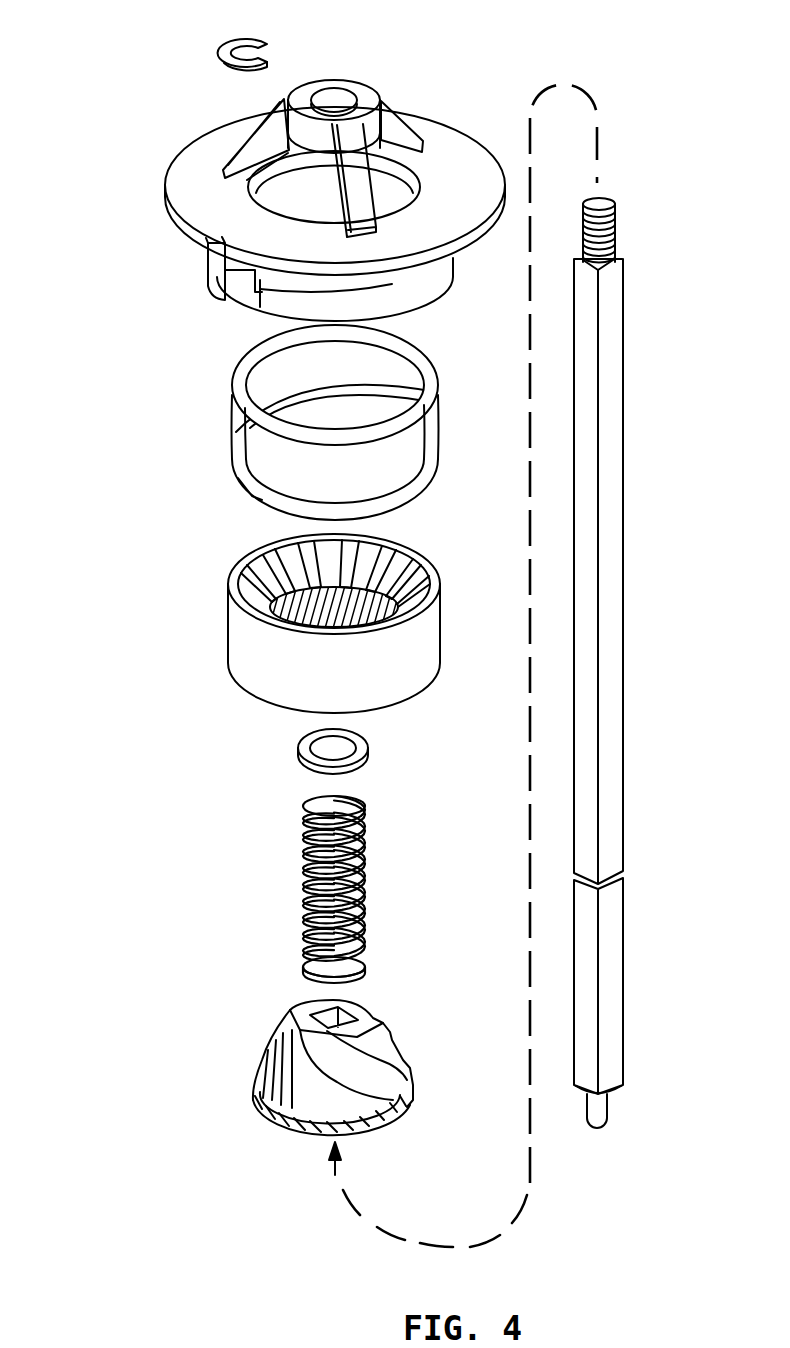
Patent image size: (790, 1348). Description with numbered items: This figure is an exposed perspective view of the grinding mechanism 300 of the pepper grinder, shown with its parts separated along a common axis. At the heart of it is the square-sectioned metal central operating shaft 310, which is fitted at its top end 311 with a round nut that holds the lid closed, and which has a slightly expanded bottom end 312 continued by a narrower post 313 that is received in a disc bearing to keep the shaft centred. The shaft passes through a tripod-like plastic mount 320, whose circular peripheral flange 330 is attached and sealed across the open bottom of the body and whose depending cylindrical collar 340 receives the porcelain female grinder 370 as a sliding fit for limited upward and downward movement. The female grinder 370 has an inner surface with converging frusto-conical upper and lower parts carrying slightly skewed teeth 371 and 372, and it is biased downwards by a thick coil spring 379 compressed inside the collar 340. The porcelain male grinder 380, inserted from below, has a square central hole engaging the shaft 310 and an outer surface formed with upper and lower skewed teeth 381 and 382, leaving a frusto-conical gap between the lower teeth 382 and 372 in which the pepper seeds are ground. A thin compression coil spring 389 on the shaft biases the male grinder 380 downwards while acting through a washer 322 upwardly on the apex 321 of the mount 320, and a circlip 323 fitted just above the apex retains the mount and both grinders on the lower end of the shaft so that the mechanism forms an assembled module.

The grinding mechanism 300 is at (145, 1162).
The central operating shaft 310 is at (642, 683).
The top end of the shaft 311 is at (615, 223).
The bottom end of the shaft 312 is at (610, 1097).
The post 313 is at (598, 1118).
The mount 320 is at (356, 132).
The apex of the mount 321 is at (332, 80).
The washer 322 is at (367, 742).
The circlip 323 is at (272, 42).
The peripheral flange 330 is at (177, 173).
The collar 340 is at (425, 288).
The female grinder 370 is at (307, 631).
The upper teeth of the female grinder 371 is at (383, 552).
The lower teeth of the female grinder 372 is at (322, 605).
The thick coil spring 379 is at (238, 442).
The male grinder 380 is at (335, 1072).
The upper teeth of the male grinder 381 is at (340, 1047).
The lower teeth of the male grinder 382 is at (390, 1112).
The thin compression coil spring 389 is at (363, 840).